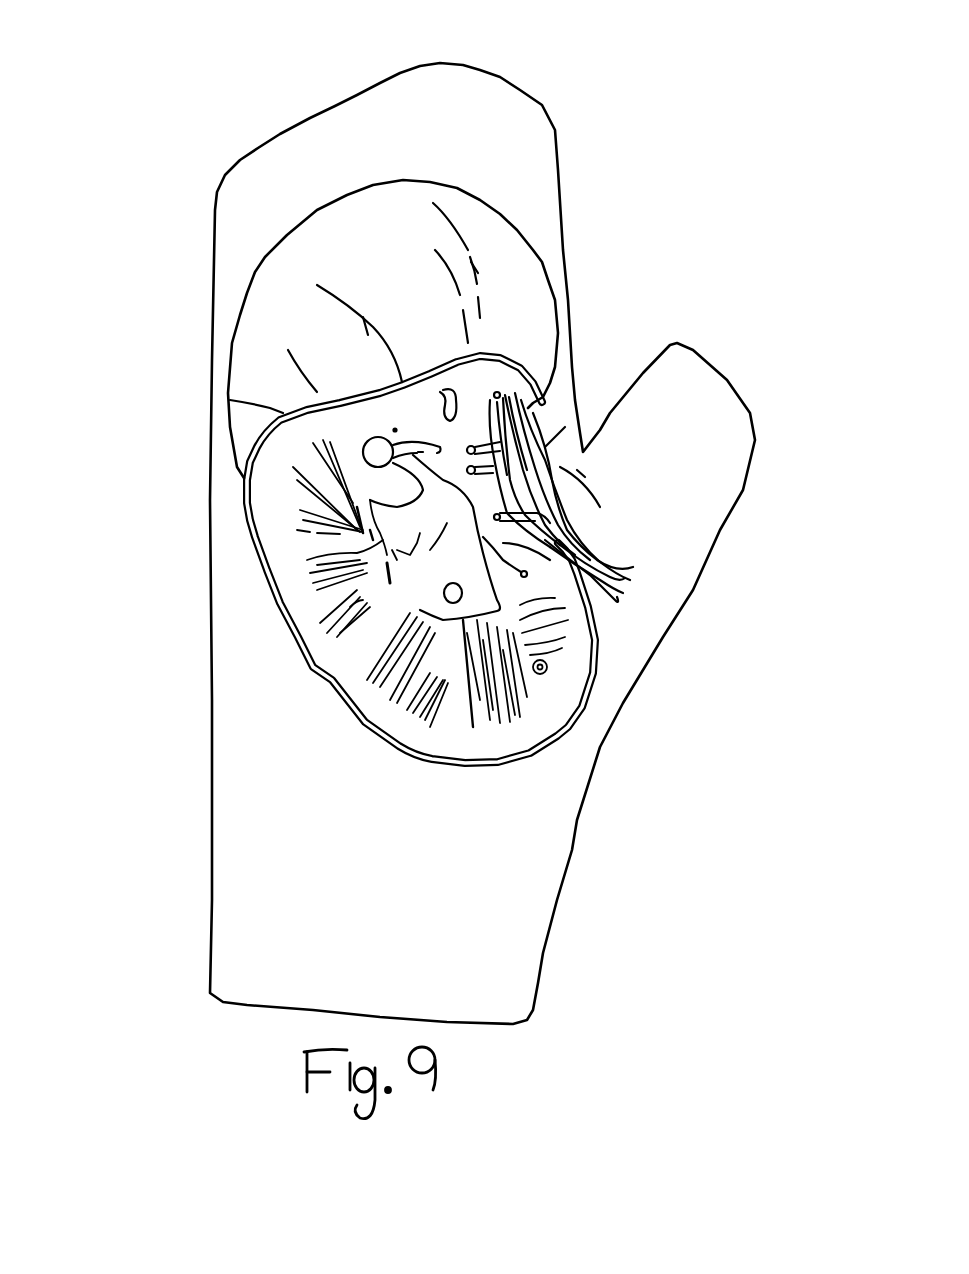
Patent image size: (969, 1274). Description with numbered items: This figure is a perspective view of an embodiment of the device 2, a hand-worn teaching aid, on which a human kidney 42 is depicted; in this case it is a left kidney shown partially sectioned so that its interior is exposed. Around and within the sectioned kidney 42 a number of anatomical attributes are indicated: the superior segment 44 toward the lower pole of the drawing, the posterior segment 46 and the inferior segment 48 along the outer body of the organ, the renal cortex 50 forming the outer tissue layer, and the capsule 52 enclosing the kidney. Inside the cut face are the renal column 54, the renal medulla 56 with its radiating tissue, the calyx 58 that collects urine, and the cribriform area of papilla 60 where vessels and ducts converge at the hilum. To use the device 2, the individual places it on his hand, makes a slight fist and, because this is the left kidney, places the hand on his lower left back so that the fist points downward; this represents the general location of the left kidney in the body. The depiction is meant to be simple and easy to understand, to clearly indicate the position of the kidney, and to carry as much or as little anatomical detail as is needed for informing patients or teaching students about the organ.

The device 2 is at (565, 122).
The human kidney 42 is at (545, 262).
The superior segment 44 is at (535, 741).
The posterior segment 46 is at (313, 628).
The inferior segment 48 is at (283, 303).
The renal cortex 50 is at (370, 633).
The capsule 52 is at (290, 405).
The renal column 54 is at (370, 570).
The renal medulla 56 is at (300, 552).
The calyx 58 is at (305, 498).
The cribriform area of papilla 60 is at (462, 593).